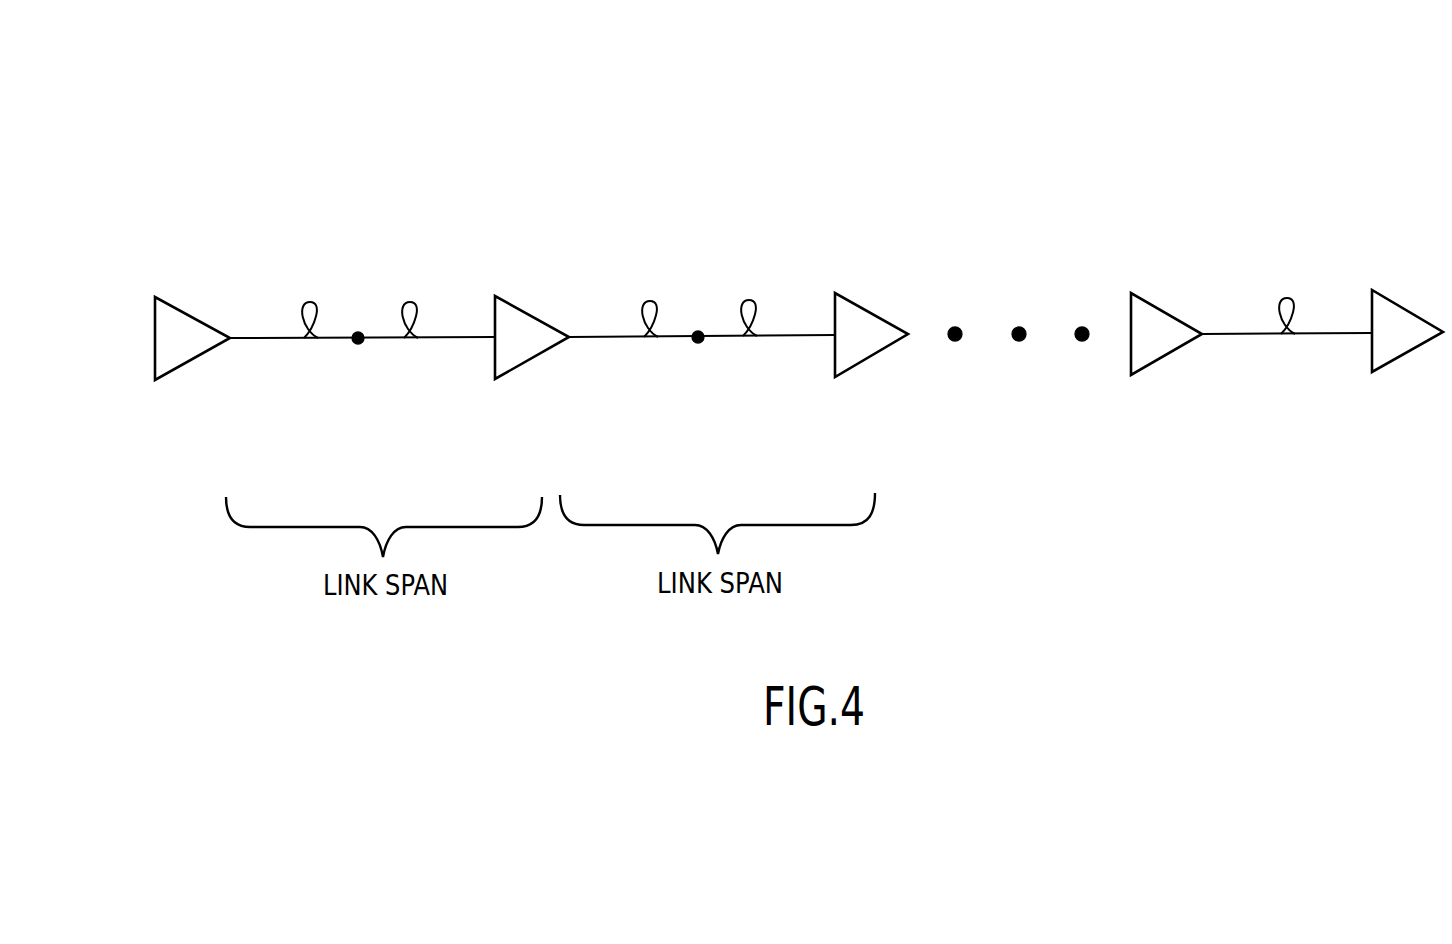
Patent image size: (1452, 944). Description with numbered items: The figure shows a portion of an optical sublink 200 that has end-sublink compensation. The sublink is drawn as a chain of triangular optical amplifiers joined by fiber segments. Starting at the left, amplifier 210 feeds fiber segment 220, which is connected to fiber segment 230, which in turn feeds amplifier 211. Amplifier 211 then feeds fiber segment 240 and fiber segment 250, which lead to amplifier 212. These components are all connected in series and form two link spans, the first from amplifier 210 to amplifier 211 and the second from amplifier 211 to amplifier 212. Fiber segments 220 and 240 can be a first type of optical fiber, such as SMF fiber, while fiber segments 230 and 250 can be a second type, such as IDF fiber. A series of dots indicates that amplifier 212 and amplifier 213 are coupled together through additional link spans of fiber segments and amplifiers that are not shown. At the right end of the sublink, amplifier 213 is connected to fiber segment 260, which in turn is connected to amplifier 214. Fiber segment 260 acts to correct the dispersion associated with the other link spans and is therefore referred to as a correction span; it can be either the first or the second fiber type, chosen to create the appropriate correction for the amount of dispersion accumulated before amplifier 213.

The optical sublink 200 is at (1164, 108).
The optical amplifier 210 is at (190, 363).
The optical amplifier 211 is at (530, 363).
The optical amplifier 212 is at (868, 357).
The optical amplifier 213 is at (1165, 357).
The optical amplifier 214 is at (1407, 355).
The fiber segment 220 is at (313, 347).
The fiber segment 230 is at (415, 347).
The fiber segment 240 is at (652, 347).
The fiber segment 250 is at (752, 345).
The fiber segment (correction span) 260 is at (1287, 345).